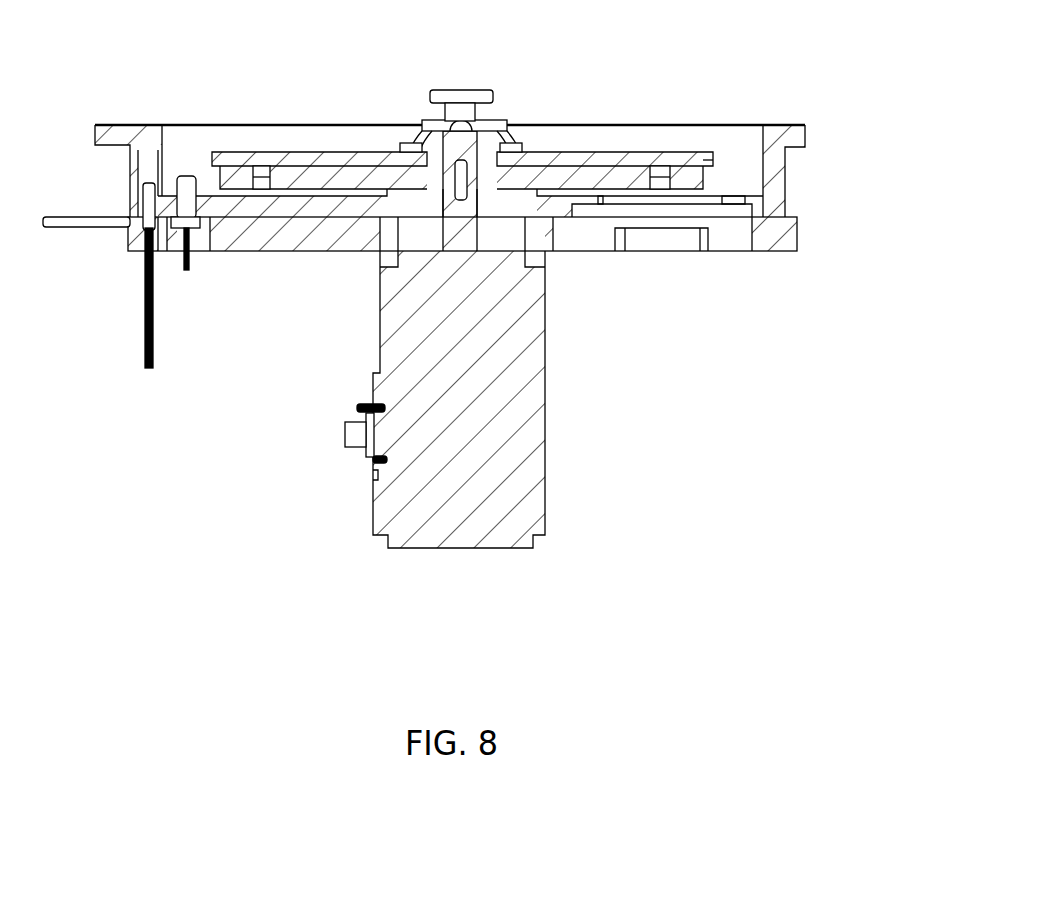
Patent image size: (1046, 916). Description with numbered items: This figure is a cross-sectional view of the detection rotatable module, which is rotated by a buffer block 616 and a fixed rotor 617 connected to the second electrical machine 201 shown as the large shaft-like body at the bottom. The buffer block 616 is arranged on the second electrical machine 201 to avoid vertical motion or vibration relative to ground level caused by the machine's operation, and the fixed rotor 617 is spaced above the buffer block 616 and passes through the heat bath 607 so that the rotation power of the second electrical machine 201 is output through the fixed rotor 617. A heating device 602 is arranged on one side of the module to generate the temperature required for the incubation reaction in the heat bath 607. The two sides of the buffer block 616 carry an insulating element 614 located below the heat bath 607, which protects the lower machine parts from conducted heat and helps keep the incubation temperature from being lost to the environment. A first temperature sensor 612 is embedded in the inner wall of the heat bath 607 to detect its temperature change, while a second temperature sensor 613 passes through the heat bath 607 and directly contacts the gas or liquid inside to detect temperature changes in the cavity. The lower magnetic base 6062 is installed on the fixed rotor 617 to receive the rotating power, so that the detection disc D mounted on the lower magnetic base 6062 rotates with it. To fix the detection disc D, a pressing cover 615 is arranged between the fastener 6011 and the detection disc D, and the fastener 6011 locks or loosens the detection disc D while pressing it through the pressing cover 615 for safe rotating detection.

The second electrical machine 201 is at (480, 367).
The heating device 602 is at (98, 222).
The heat bath 607 is at (738, 145).
The first temperature sensor 612 is at (143, 190).
The second temperature sensor 613 is at (186, 178).
The insulating element 614 is at (241, 240).
The pressing cover 615 is at (408, 133).
The buffer block 616 is at (447, 140).
The fixed rotor 617 is at (495, 195).
The fastener 6011 is at (477, 104).
The lower magnetic base 6062 is at (685, 180).
The detection disc D is at (683, 165).